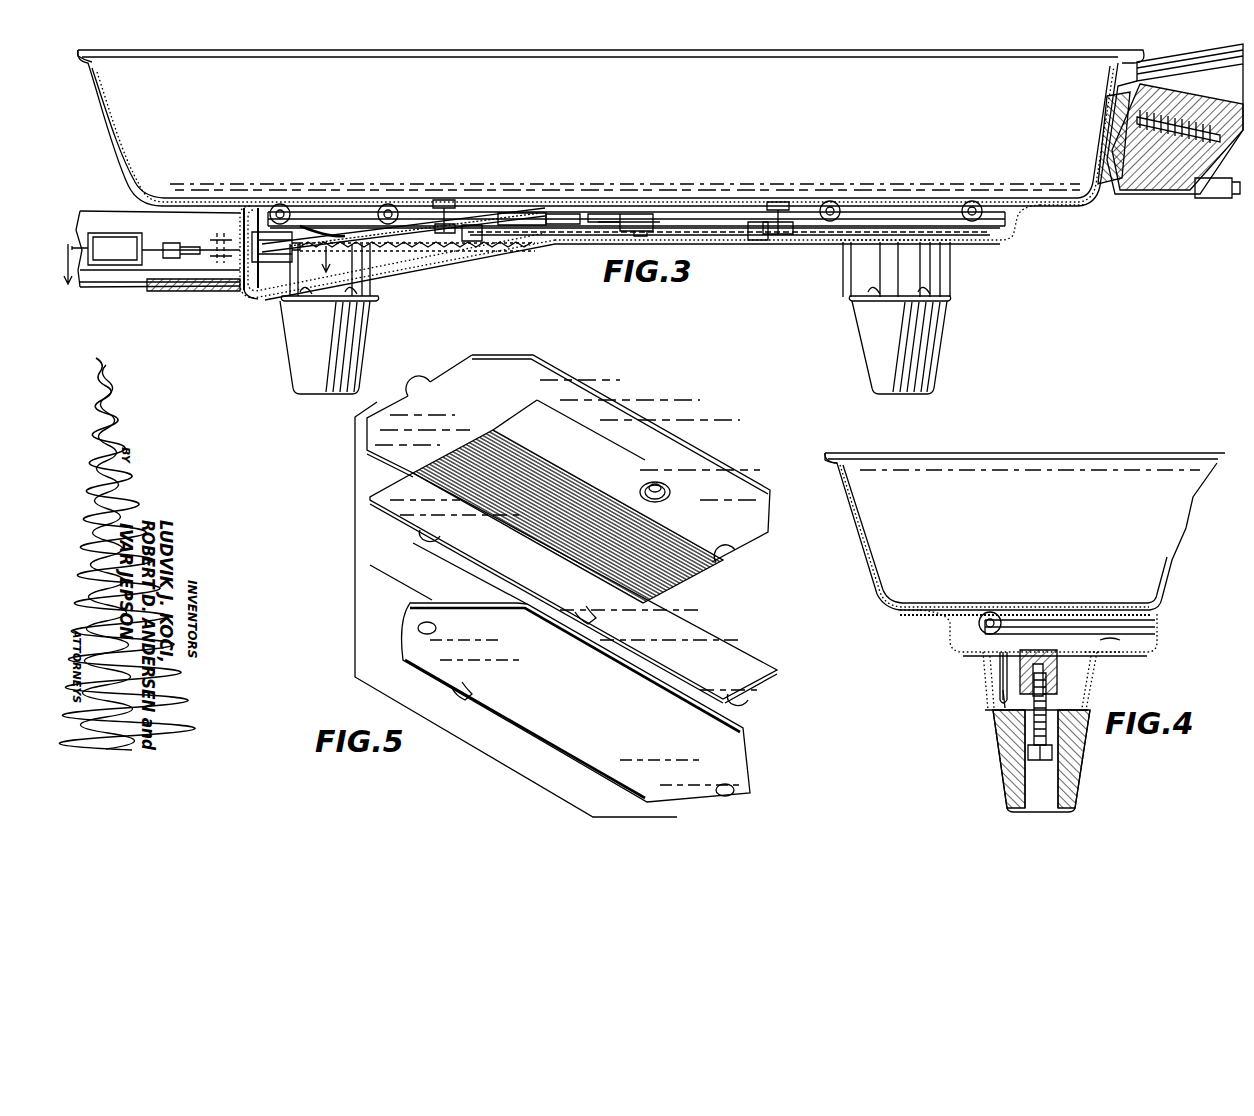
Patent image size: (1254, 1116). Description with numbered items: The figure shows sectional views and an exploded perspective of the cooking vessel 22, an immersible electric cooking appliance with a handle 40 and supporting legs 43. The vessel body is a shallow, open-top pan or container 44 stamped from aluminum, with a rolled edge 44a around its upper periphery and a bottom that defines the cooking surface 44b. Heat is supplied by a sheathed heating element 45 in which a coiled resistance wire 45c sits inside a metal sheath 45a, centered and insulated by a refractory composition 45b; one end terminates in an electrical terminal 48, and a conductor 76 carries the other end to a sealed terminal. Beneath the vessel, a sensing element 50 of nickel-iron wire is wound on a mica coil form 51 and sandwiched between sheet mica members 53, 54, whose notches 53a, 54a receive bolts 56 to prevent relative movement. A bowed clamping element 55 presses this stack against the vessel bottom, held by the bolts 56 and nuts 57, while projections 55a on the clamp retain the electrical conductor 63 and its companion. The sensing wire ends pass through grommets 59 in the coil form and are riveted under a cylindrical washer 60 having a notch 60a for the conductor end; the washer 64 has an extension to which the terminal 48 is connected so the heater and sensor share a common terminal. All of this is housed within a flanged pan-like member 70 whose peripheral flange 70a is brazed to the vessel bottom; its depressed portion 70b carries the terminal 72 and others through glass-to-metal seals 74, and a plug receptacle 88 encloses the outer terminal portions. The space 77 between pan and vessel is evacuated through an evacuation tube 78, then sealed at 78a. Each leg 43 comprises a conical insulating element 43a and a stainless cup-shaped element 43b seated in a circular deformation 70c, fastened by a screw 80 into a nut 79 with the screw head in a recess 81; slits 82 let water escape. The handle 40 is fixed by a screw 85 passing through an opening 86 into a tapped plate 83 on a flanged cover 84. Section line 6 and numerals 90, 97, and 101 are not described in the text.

In FIG. 3, the pan or container 44 is at (296, 76).
In FIG. 4, the pan or container 44 is at (960, 466).
In FIG. 3, the rolled edge 44a is at (100, 50).
In FIG. 4, the rolled edge 44a is at (864, 458).
In FIG. 3, the cooking surface 44b is at (520, 206).
In FIG. 4, the cooking surface 44b is at (1095, 608).
In FIG. 3, the handle 40 is at (1238, 52).
In FIG. 3, the heating element 45 is at (880, 212).
In FIG. 4, the heating element 45 is at (1050, 622).
In FIG. 3, the sheath 45a is at (300, 212).
In FIG. 3, the refractory composition 45b is at (280, 204).
In FIG. 3, the coiled resistance wire 45c is at (312, 230).
In FIG. 3, the conductor 76 is at (335, 240).
In FIG. 3, the bolts 56 is at (444, 200).
In FIG. 3, the sheet mica member 53 is at (545, 212).
In FIG. 5, the sheet mica member 53 is at (498, 356).
In FIG. 5, the notch 53a is at (422, 390).
In FIG. 3, the coil form 51 is at (584, 212).
In FIG. 5, the coil form 51 is at (600, 445).
In FIG. 3, the sheet mica member 54 is at (612, 215).
In FIG. 5, the sheet mica member 54 is at (716, 650).
In FIG. 5, the notch 54a is at (420, 532).
In FIG. 3, the electrical terminal 48 is at (650, 214).
In FIG. 3, the cylindrical washer 64 is at (628, 230).
In FIG. 3, the clamping element 55 is at (514, 226).
In FIG. 5, the clamping element 55 is at (738, 724).
In FIG. 3, the projections 55a is at (562, 226).
In FIG. 5, the projections 55a is at (660, 622).
In FIG. 3, the nuts 57 is at (470, 242).
In FIG. 3, the space 77 is at (420, 248).
In FIG. 4, the space 77 is at (1130, 648).
In FIG. 3, the electrical conductor 63 is at (395, 240).
In FIG. 3, the section line 6 is at (196, 272).
In FIG. 3, the pan-like member 70 is at (975, 243).
In FIG. 4, the pan-like member 70 is at (1158, 648).
In FIG. 3, the peripheral flange 70a is at (1022, 204).
In FIG. 4, the peripheral flange 70a is at (938, 618).
In FIG. 3, the depressed portion 70b is at (262, 300).
In FIG. 3, the circular deformations 70c is at (838, 243).
In FIG. 4, the circular deformations 70c is at (1095, 662).
In FIG. 3, the glass-to-metal seals 74 is at (243, 282).
In FIG. 3, the slits 82 is at (305, 300).
In FIG. 4, the slits 82 is at (1096, 694).
In FIG. 3, the supporting legs 43 is at (287, 392).
In FIG. 4, the supporting legs 43 is at (1084, 752).
In FIG. 3, the insulating element 43a is at (290, 350).
In FIG. 4, the insulating element 43a is at (1080, 782).
In FIG. 3, the cup-shaped element 43b is at (370, 292).
In FIG. 4, the cup-shaped element 43b is at (990, 706).
In FIG. 3, the cooking vessel 22 is at (1014, 288).
In FIG. 3, the control housing 90 is at (120, 282).
In FIG. 3, the switch 101 is at (120, 248).
In FIG. 3, the actuating rod 97 is at (164, 250).
In FIG. 3, the terminal 72 is at (218, 246).
In FIG. 3, the plug receptacle 88 is at (178, 290).
In FIG. 3, the tapped plate or nut 83 is at (1152, 192).
In FIG. 3, the flanged cover 84 is at (1108, 186).
In FIG. 3, the screw 85 is at (1225, 150).
In FIG. 3, the opening 86 is at (1210, 198).
In FIG. 5, the sensing element 50 is at (522, 460).
In FIG. 5, the cylindrical washer 60 is at (670, 492).
In FIG. 5, the grommets 59 is at (660, 486).
In FIG. 5, the notch 60a is at (650, 484).
In FIG. 4, the nut 79 is at (1030, 640).
In FIG. 4, the evacuation tube 78 is at (1000, 668).
In FIG. 4, the sealed end 78a is at (1002, 696).
In FIG. 4, the screw 80 is at (1012, 722).
In FIG. 4, the recess 81 is at (1048, 790).